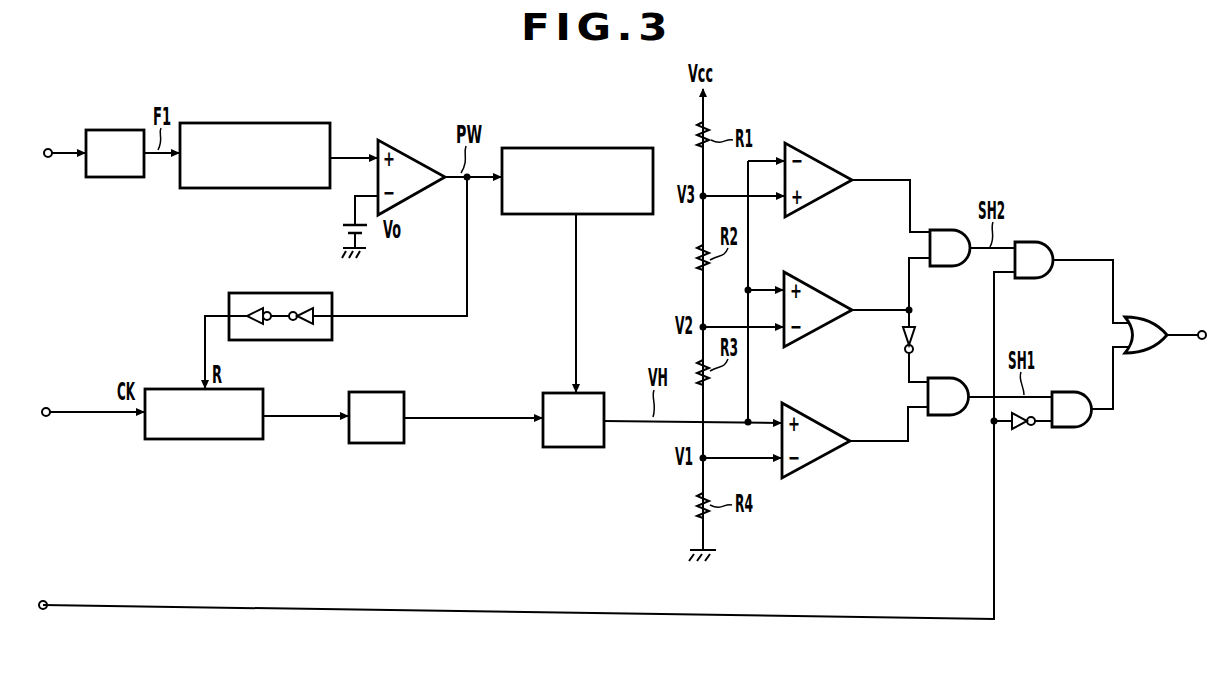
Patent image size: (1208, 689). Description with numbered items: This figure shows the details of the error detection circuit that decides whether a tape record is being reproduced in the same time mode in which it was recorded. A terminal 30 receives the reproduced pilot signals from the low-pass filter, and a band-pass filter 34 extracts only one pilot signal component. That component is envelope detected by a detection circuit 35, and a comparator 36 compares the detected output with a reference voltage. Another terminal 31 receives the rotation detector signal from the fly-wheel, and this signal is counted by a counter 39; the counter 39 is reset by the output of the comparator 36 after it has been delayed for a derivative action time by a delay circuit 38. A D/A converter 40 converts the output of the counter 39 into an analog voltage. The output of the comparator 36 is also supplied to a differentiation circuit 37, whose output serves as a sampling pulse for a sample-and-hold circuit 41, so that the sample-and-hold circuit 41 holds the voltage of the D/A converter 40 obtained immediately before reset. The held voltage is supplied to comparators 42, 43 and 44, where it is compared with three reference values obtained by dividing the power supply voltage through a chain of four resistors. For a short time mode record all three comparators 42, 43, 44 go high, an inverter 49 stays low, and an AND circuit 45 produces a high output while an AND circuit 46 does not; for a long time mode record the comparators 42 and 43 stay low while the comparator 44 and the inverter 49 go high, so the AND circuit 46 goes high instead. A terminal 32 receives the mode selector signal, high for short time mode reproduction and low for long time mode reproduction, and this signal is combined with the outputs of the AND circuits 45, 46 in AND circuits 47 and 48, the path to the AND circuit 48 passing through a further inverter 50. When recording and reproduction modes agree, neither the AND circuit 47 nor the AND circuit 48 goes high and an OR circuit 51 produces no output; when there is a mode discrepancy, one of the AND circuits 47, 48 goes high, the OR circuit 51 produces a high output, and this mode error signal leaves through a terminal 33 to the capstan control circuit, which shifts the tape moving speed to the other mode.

The terminal 30 is at (48, 149).
The terminal 31 is at (46, 408).
The terminal 32 is at (43, 601).
The terminal 33 is at (1202, 331).
The band-pass filter 34 is at (125, 130).
The detection circuit 35 is at (300, 123).
The comparator 36 is at (421, 159).
The differentiation circuit 37 is at (613, 148).
The delay circuit 38 is at (306, 270).
The counter 39 is at (242, 389).
The D/A converter 40 is at (387, 392).
The sample-and-hold circuit 41 is at (590, 393).
The comparator 42 is at (838, 146).
The comparator 43 is at (842, 268).
The comparator 44 is at (836, 396).
The AND circuit 45 is at (950, 230).
The AND circuit 46 is at (940, 378).
The AND circuit 47 is at (1030, 242).
The AND circuit 48 is at (1062, 392).
The inverter 49 is at (902, 337).
The inverter 50 is at (1020, 430).
The OR circuit 51 is at (1143, 317).